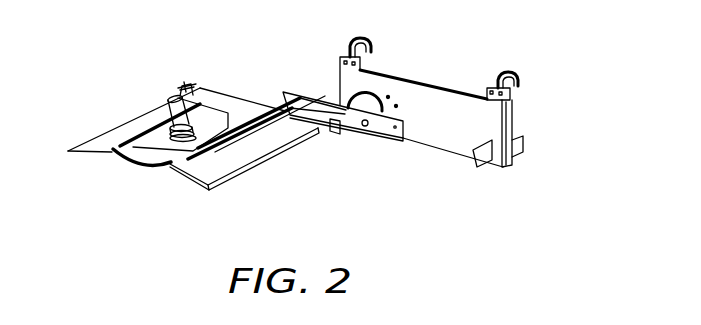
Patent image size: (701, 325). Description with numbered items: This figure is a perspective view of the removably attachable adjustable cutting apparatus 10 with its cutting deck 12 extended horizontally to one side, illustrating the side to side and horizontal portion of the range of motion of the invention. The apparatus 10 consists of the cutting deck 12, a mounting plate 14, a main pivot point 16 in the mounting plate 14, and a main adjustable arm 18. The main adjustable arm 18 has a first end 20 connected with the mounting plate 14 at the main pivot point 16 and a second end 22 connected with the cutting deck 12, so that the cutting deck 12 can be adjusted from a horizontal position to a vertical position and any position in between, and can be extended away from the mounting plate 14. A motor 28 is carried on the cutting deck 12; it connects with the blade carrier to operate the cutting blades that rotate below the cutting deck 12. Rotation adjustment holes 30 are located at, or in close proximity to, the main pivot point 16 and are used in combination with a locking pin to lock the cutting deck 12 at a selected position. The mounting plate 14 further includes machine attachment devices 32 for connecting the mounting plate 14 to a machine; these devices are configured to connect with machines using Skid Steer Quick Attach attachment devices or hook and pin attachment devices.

The removably attachable adjustable cutting apparatus 10 is at (87, 185).
The cutting deck 12 is at (224, 172).
The mounting plate 14 is at (445, 147).
The main pivot point 16 is at (350, 101).
The main adjustable arm 18 is at (345, 133).
The first end 20 is at (381, 140).
The second end 22 is at (220, 133).
The motor 28 is at (167, 103).
The rotation adjustment holes 30 is at (397, 105).
The machine attachment devices 32 is at (352, 42).